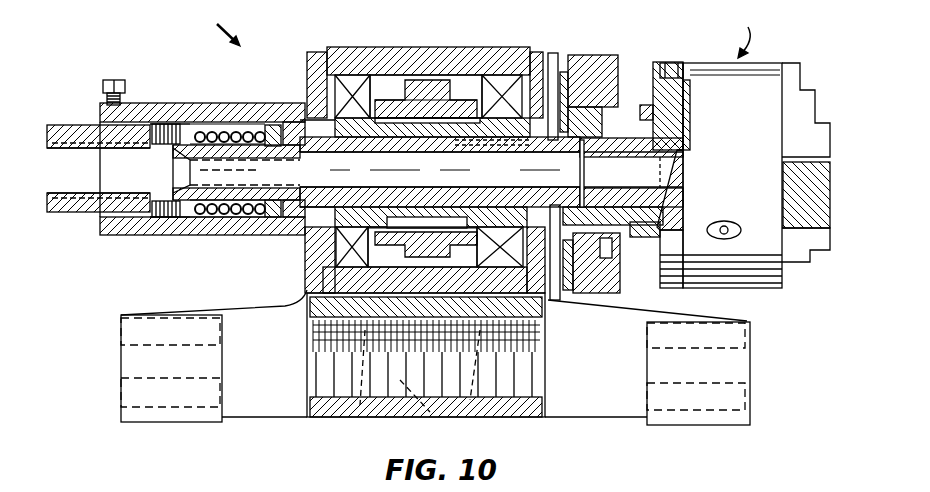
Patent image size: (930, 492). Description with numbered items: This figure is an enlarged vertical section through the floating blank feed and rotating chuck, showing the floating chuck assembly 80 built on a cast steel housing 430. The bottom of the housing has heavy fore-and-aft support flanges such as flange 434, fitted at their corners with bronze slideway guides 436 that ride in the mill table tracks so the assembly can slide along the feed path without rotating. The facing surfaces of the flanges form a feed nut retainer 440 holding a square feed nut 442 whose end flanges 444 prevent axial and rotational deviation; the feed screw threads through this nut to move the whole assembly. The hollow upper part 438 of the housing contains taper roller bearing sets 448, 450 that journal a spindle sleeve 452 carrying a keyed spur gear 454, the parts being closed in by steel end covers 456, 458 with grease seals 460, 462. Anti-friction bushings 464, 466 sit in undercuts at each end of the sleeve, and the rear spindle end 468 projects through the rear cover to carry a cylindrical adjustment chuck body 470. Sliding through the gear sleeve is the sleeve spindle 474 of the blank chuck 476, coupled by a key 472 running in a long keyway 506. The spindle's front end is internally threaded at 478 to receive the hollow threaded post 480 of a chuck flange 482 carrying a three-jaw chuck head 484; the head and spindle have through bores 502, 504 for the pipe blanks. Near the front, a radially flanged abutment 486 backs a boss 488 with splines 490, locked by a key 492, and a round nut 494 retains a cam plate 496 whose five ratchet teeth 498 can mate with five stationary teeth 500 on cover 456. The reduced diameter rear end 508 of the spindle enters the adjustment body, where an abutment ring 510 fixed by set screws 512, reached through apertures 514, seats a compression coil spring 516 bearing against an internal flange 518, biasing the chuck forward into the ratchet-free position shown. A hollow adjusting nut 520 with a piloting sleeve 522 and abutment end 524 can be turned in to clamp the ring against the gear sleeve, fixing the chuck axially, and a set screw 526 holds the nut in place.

The floating chuck assembly 80 is at (215, 27).
The housing 430 is at (323, 280).
The support flange 434 is at (290, 405).
The slideway guides 436 is at (152, 422).
The hollow upper part of housing 438 is at (393, 47).
The feed nut retainer 440 is at (352, 418).
The feed nut 442 is at (528, 362).
The end flanges 444 is at (432, 418).
The taper roller bearing set 448 is at (502, 80).
The taper roller bearing set 450 is at (352, 80).
The spindle sleeve 452 is at (450, 100).
The spur gear 454 is at (428, 85).
The end cover 456 is at (536, 52).
The end cover 458 is at (316, 52).
The spindle grease seal 460 is at (478, 240).
The spindle grease seal 462 is at (310, 235).
The anti-friction bushing 464 is at (522, 130).
The anti-friction bushing 466 is at (330, 158).
The rear spindle end 468 is at (295, 195).
The adjustment chuck body 470 is at (195, 103).
The key 472 is at (438, 150).
The sleeve spindle 474 is at (380, 140).
The blank chuck 476 is at (736, 34).
The internal threads 478 is at (670, 200).
The hollow threaded post 480 is at (622, 172).
The chuck flange 482 is at (653, 115).
The three-jaw chuck head 484 is at (760, 163).
The radially flanged abutment 486 is at (647, 238).
The boss 488 is at (618, 270).
The splines 490 is at (592, 107).
The key 492 is at (683, 148).
The round nut 494 is at (672, 58).
The cam plate 496 is at (600, 55).
The camming ratchet teeth 498 is at (564, 72).
The mating ratchet teeth 500 is at (553, 53).
The axial through bore 502 is at (665, 182).
The axial through bore 504 is at (190, 192).
The keyway 506 is at (470, 145).
The reduced diameter rear end 508 is at (240, 222).
The abutment ring 510 is at (256, 124).
The set screws 512 is at (273, 124).
The apertures 514 is at (226, 132).
The compression coil spring 516 is at (168, 124).
The internal flange 518 is at (176, 152).
The adjusting nut 520 is at (80, 125).
The sleeve 522 is at (150, 150).
The abutment end 524 is at (238, 124).
The set screw 526 is at (112, 80).